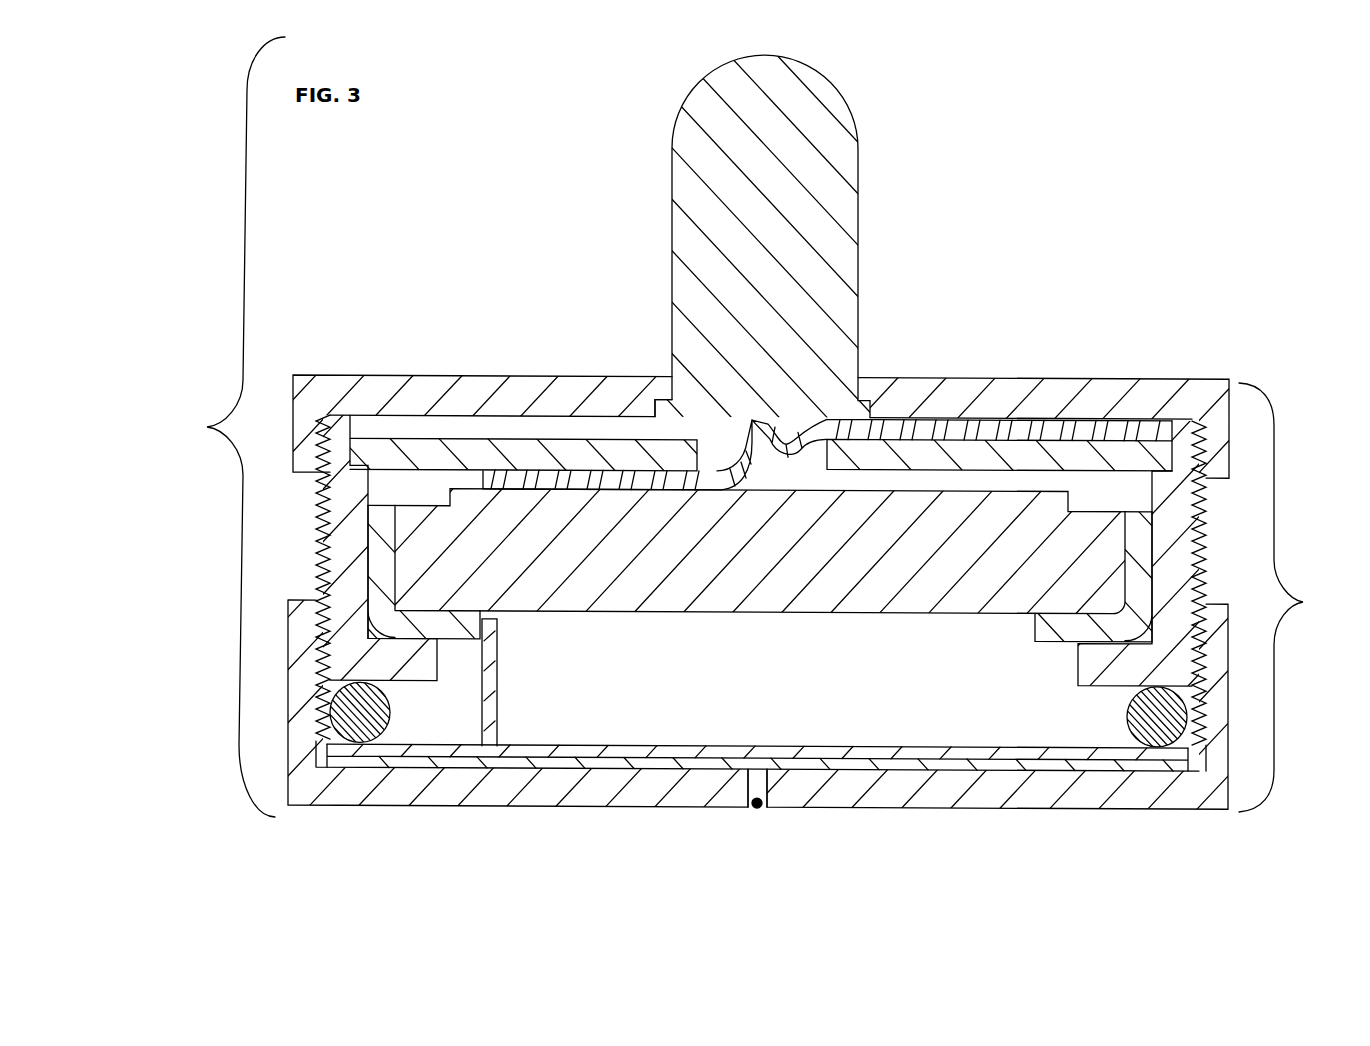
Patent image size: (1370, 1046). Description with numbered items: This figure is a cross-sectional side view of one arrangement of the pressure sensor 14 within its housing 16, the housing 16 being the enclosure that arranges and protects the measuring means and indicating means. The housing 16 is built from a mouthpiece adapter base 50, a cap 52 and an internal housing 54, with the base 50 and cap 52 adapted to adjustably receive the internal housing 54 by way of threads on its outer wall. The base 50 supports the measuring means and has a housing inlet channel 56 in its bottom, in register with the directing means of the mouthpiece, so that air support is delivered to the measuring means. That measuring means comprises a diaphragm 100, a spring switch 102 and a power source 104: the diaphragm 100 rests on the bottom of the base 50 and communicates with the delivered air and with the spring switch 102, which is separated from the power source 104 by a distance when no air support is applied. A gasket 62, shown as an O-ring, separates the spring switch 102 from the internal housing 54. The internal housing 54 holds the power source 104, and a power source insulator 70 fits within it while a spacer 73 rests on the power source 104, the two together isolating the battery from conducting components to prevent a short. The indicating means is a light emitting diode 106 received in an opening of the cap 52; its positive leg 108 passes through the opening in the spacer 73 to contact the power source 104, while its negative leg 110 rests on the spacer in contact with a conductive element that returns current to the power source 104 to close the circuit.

The pressure sensor 14 is at (231, 427).
The housing 16 is at (1293, 597).
The mouthpiece adapter base 50 is at (920, 818).
The cap 52 is at (544, 365).
The internal housing 54 is at (446, 670).
The housing inlet channel 56 is at (760, 808).
The gasket 62 is at (401, 731).
The power source insulator 70 is at (1023, 628).
The spacer 73 is at (859, 444).
The diaphragm 100 is at (1040, 782).
The spring switch 102 is at (1107, 762).
The power source 104 is at (1027, 482).
The light emitting diode 106 is at (661, 208).
The positive leg 108 is at (487, 460).
The negative leg 110 is at (972, 421).